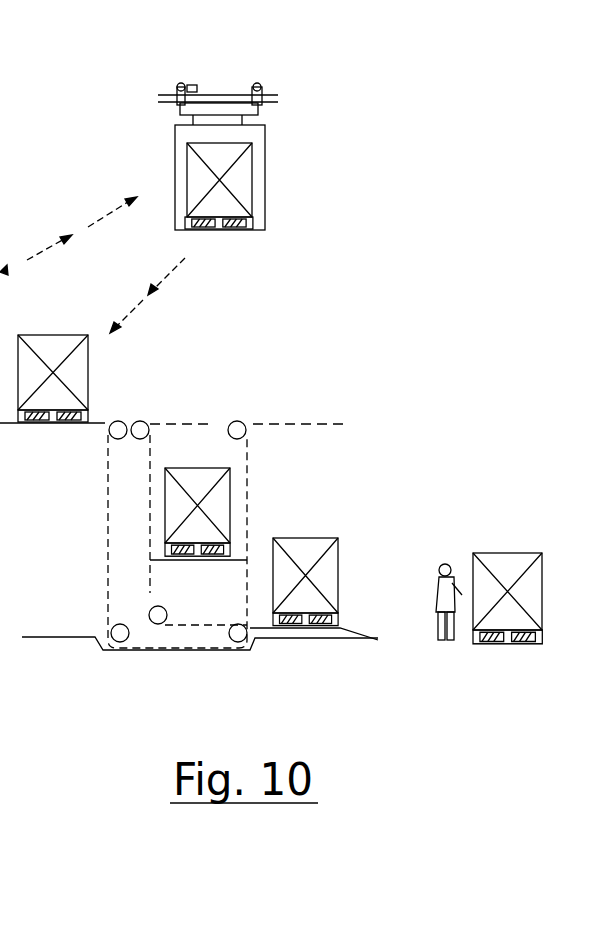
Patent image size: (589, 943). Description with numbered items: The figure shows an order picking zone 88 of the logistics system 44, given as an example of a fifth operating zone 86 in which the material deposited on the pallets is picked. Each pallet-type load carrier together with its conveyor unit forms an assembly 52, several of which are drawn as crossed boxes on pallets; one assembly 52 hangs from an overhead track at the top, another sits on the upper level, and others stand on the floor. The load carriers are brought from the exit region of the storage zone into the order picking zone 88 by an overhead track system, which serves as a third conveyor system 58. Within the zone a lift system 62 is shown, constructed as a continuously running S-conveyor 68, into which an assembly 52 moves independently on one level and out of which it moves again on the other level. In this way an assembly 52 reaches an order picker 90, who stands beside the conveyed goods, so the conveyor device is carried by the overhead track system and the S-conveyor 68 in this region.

The logistics system 44 is at (398, 103).
The assembly 52 is at (50, 340).
The third conveyor system 58 is at (292, 448).
The lift system 62 is at (278, 475).
The S-conveyor 68 is at (172, 652).
The fifth operating zone 86 is at (420, 145).
The order picking zone 88 is at (462, 227).
The order picker 90 is at (449, 564).